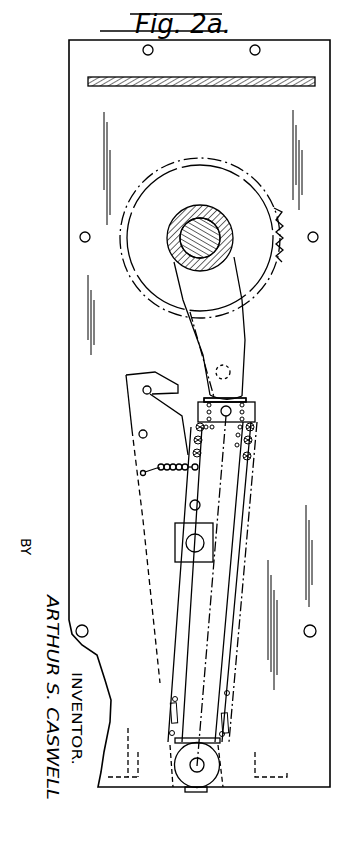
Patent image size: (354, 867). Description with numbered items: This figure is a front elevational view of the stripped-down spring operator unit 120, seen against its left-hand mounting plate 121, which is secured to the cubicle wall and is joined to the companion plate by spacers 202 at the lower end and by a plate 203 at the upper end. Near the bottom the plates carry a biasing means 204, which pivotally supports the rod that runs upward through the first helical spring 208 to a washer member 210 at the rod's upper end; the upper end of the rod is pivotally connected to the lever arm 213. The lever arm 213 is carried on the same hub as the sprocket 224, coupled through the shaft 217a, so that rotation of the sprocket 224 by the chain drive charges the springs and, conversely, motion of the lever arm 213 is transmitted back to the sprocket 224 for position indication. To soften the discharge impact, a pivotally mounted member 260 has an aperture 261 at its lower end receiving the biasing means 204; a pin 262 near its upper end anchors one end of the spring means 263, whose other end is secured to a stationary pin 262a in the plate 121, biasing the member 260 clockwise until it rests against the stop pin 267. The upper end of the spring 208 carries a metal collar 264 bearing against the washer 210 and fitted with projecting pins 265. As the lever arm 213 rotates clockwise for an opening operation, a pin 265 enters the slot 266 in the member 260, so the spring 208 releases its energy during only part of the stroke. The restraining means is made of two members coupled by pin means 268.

The spring operator unit 120 is at (66, 104).
The first supporting plate 121 is at (76, 362).
The spacers 202 is at (282, 738).
The plate 203 is at (181, 88).
The biasing means 204 is at (218, 762).
The first helical spring 208 is at (252, 458).
The washer member 210 is at (248, 400).
The lever arm 213 is at (246, 343).
The shaft 217a is at (227, 200).
The sprocket 224 is at (248, 301).
The pivotally mounted member 260 is at (150, 521).
The aperture 261 is at (178, 745).
The pin 262 is at (141, 475).
The stationary pin 262a is at (165, 458).
The spring means 263 is at (192, 471).
The metal collar 264 is at (256, 410).
The projecting pin 265 is at (222, 428).
The slot 266 is at (145, 390).
The stop pin 267 is at (190, 548).
The pin means 268 is at (140, 431).